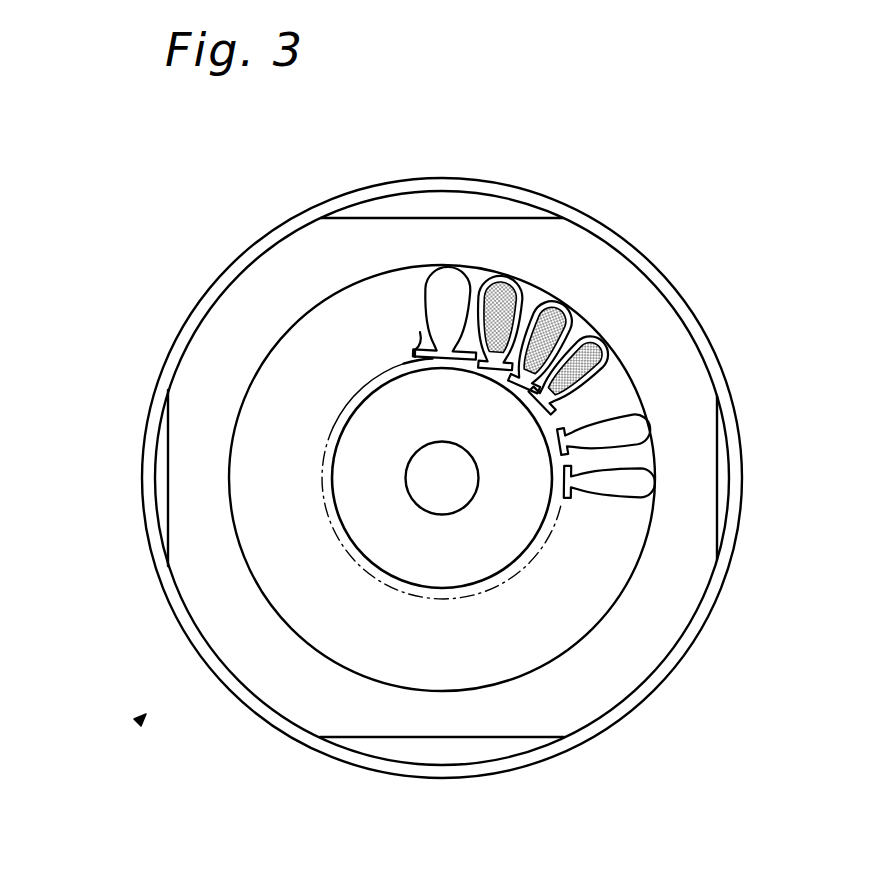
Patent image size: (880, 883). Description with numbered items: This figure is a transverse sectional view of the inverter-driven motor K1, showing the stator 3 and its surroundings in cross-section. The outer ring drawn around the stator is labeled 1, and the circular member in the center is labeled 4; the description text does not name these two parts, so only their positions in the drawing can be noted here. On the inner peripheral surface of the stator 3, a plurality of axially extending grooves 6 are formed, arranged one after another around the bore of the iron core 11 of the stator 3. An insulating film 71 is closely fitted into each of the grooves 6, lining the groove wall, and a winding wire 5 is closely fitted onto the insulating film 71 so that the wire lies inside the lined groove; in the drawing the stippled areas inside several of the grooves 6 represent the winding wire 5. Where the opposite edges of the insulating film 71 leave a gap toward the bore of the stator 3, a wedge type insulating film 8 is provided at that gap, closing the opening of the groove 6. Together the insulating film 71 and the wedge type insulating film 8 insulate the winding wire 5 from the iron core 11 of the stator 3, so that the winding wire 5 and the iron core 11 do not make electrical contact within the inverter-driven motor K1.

The housing 1 is at (492, 186).
The stator 3 is at (690, 476).
The rotor 4 is at (508, 525).
The winding wire 5 is at (512, 292).
The grooves 6 is at (613, 447).
The wedge type insulating film 8 is at (520, 373).
The iron core 11 is at (650, 357).
The insulating film 71 is at (573, 322).
The inverter-driven motor K1 is at (138, 722).